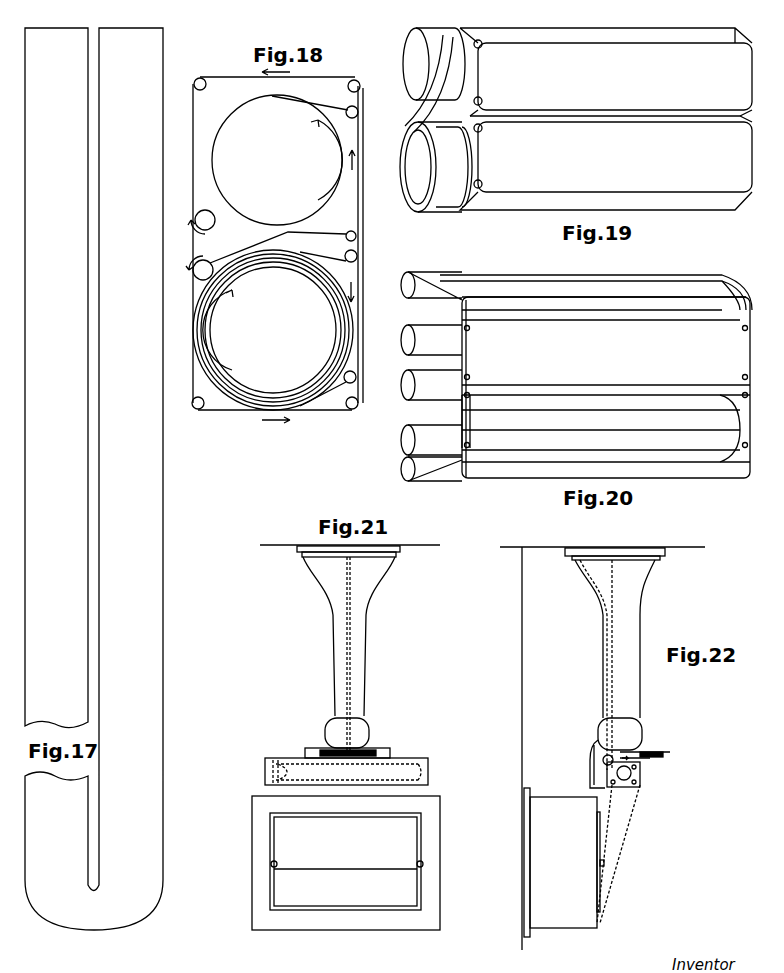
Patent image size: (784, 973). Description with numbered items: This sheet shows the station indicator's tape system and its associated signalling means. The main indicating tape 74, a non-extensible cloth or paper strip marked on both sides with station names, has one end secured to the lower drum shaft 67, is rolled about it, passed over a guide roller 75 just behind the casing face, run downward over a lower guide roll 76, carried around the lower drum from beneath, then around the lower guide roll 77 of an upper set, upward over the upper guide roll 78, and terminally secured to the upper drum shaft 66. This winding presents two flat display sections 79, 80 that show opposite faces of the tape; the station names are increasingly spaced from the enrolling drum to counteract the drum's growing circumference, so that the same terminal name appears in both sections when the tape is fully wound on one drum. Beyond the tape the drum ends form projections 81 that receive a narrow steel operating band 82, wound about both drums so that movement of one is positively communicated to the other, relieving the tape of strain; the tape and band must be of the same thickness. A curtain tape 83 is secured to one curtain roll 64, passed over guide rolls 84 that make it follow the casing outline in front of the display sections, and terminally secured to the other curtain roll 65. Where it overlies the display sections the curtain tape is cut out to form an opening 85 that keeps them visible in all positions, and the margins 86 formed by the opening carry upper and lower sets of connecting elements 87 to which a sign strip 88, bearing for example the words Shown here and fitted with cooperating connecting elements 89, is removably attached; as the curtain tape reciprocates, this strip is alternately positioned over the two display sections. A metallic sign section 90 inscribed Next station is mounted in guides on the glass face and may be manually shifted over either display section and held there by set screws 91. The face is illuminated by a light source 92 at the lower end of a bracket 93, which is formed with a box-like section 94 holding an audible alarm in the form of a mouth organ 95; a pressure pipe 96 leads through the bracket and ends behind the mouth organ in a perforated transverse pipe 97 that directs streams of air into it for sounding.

In FIG. 18, the curtain roll 64 is at (217, 227).
In FIG. 20, the curtain roll 64 is at (417, 340).
In FIG. 18, the curtain roll 65 is at (217, 260).
In FIG. 20, the curtain roll 65 is at (417, 387).
In FIG. 18, the upper drum shaft 66 is at (277, 160).
In FIG. 19, the upper drum shaft 66 is at (418, 64).
In FIG. 18, the lower drum shaft 67 is at (273, 330).
In FIG. 19, the lower drum shaft 67 is at (417, 167).
In FIG. 17, the main indicating tape 74 is at (94, 479).
In FIG. 18, the main indicating tape 74 is at (337, 264).
In FIG. 19, the main indicating tape 74 is at (590, 119).
In FIG. 18, the guide roller 75 is at (347, 255).
In FIG. 19, the guide roller 75 is at (489, 128).
In FIG. 18, the lower guide roll 76 is at (347, 387).
In FIG. 19, the lower guide roll 76 is at (489, 184).
In FIG. 18, the lower guide roll of upper set 77 is at (370, 236).
In FIG. 19, the lower guide roll of upper set 77 is at (489, 100).
In FIG. 18, the upper guide roll of upper set 78 is at (332, 101).
In FIG. 19, the upper guide roll of upper set 78 is at (489, 47).
In FIG. 18, the display section 79 is at (378, 318).
In FIG. 18, the display section 80 is at (378, 178).
In FIG. 19, the projections 81 is at (450, 182).
In FIG. 18, the operating band 82 is at (278, 246).
In FIG. 19, the operating band 82 is at (418, 83).
In FIG. 18, the curtain tape 83 is at (293, 243).
In FIG. 20, the curtain tape 83 is at (417, 433).
In FIG. 18, the guide rolls 84 is at (278, 246).
In FIG. 20, the guide rolls 84 is at (431, 376).
In FIG. 20, the opening 85 is at (596, 365).
In FIG. 20, the margins 86 is at (446, 389).
In FIG. 20, the connecting elements 87 is at (605, 421).
In FIG. 20, the sign strip 88 is at (606, 378).
In FIG. 20, the cooperating connecting elements 89 is at (609, 353).
In FIG. 21, the sign section 90 is at (331, 863).
In FIG. 21, the set screws 91 is at (343, 865).
In FIG. 22, the set screws 91 is at (584, 862).
In FIG. 21, the light source 92 is at (326, 771).
In FIG. 22, the light source 92 is at (638, 842).
In FIG. 21, the bracket 93 is at (328, 733).
In FIG. 22, the bracket 93 is at (602, 753).
In FIG. 21, the box-like section 94 is at (316, 744).
In FIG. 22, the box-like section 94 is at (645, 737).
In FIG. 21, the mouth organ 95 is at (368, 743).
In FIG. 22, the mouth organ 95 is at (670, 755).
In FIG. 21, the pressure pipe 96 is at (350, 648).
In FIG. 22, the pressure pipe 96 is at (601, 659).
In FIG. 22, the transverse pipe 97 is at (592, 761).